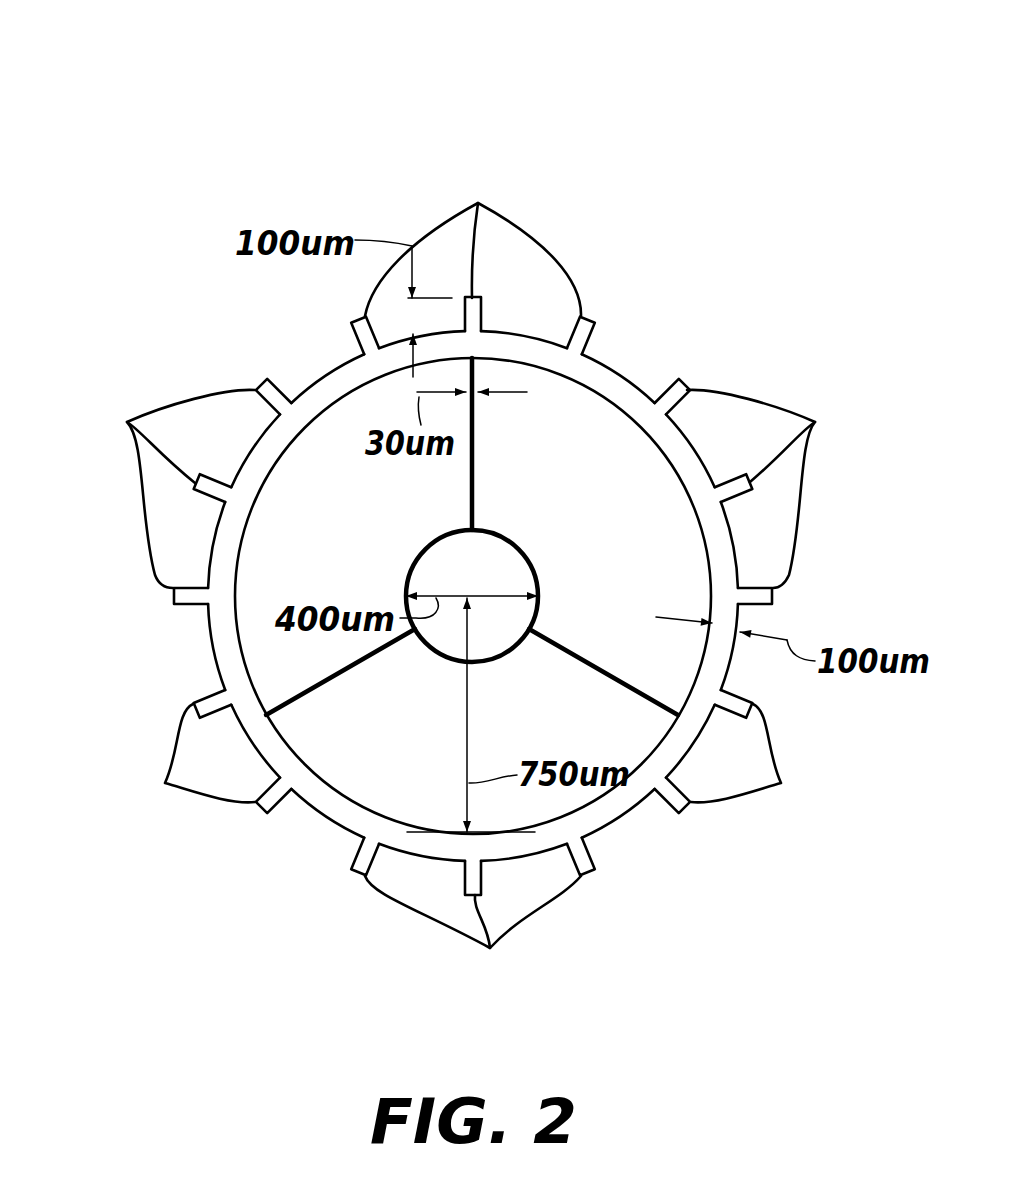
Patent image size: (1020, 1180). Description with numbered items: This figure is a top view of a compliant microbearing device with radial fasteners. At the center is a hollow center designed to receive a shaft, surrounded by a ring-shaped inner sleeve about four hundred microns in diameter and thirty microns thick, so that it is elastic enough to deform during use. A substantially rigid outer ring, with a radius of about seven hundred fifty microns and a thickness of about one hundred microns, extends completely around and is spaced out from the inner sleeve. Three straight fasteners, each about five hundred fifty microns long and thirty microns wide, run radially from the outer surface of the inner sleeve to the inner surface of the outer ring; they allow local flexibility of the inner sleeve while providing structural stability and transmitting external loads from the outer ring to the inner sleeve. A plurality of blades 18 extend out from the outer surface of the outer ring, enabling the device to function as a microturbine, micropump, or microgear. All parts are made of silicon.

The blades 18 is at (472, 578).